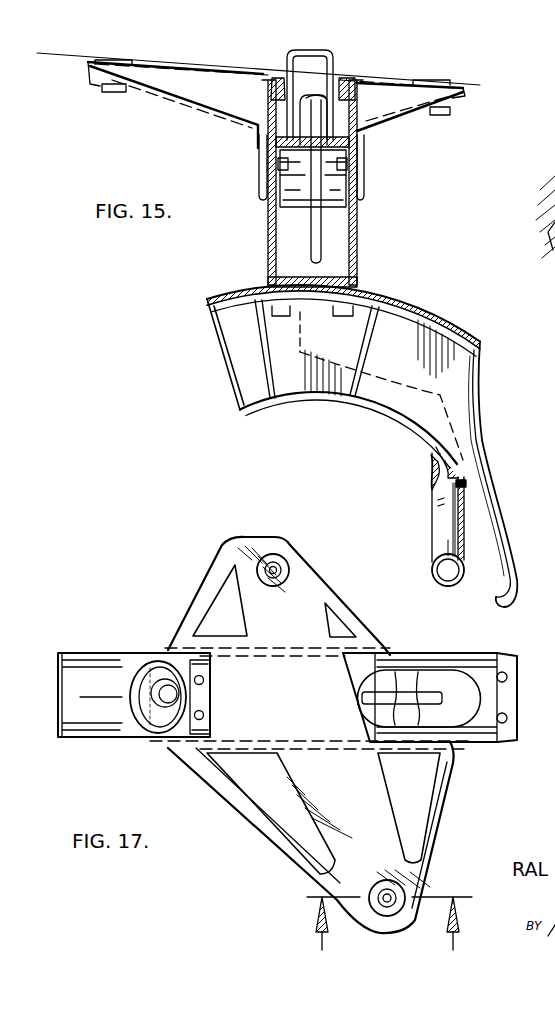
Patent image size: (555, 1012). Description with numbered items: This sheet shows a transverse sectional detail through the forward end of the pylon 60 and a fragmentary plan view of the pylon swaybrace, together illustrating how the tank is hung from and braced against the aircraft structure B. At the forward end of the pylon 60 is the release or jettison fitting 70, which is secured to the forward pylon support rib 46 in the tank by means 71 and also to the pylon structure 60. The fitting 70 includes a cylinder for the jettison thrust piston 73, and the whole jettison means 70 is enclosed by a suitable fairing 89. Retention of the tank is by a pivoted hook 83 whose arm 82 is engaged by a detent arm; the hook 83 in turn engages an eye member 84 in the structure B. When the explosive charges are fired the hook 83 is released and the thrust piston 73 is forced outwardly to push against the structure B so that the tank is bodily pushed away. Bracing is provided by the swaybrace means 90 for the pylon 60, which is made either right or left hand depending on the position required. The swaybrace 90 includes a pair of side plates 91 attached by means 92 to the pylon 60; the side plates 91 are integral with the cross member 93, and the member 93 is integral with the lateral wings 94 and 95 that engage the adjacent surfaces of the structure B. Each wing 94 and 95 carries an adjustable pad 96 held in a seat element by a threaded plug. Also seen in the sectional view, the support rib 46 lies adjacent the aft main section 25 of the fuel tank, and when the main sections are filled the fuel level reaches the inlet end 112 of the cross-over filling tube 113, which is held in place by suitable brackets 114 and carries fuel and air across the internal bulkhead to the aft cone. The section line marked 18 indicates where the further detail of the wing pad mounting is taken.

In FIG. 15, the aft main section 25 is at (420, 296).
In FIG. 15, the forward pylon support rib 46 is at (482, 381).
In FIG. 15, the pylon 60 is at (265, 240).
In FIG. 17, the pylon 60 is at (483, 745).
In FIG. 15, the release or jettison fitting 70 is at (554, 170).
In FIG. 17, the release or jettison fitting 70 is at (127, 712).
In FIG. 15, the securing means 71 is at (342, 317).
In FIG. 17, the jettison thrust piston 73 is at (167, 701).
In FIG. 15, the arm of pivoted hook 82 is at (318, 242).
In FIG. 17, the arm of pivoted hook 82 is at (440, 697).
In FIG. 15, the pivoted hook 83 is at (316, 100).
In FIG. 15, the eye member 84 is at (310, 50).
In FIG. 17, the fairing 89 is at (66, 742).
In FIG. 15, the swaybrace means 90 is at (163, 98).
In FIG. 17, the swaybrace means 90 is at (205, 566).
In FIG. 15, the side plates 91 is at (259, 190).
In FIG. 17, the side plates 91 is at (296, 646).
In FIG. 15, the attaching means 92 is at (258, 163).
In FIG. 15, the cross member 93 is at (367, 86).
In FIG. 17, the cross member 93 is at (312, 702).
In FIG. 15, the lateral wing 94 is at (191, 103).
In FIG. 17, the lateral wing 94 is at (440, 837).
In FIG. 15, the lateral wing 95 is at (406, 117).
In FIG. 17, the lateral wing 95 is at (311, 575).
In FIG. 15, the adjustable pad 96 is at (112, 60).
In FIG. 17, the adjustable pad 96 is at (275, 556).
In FIG. 15, the inlet end 112 is at (358, 290).
In FIG. 15, the cross-over filling tube 113 is at (431, 548).
In FIG. 15, the brackets 114 is at (428, 473).
In FIG. 17, the section line 18 is at (388, 926).
In FIG. 15, the aircraft structure B is at (278, 78).